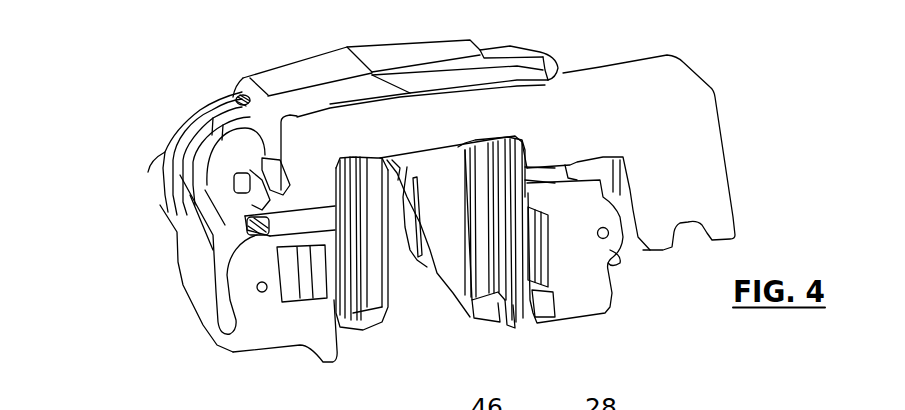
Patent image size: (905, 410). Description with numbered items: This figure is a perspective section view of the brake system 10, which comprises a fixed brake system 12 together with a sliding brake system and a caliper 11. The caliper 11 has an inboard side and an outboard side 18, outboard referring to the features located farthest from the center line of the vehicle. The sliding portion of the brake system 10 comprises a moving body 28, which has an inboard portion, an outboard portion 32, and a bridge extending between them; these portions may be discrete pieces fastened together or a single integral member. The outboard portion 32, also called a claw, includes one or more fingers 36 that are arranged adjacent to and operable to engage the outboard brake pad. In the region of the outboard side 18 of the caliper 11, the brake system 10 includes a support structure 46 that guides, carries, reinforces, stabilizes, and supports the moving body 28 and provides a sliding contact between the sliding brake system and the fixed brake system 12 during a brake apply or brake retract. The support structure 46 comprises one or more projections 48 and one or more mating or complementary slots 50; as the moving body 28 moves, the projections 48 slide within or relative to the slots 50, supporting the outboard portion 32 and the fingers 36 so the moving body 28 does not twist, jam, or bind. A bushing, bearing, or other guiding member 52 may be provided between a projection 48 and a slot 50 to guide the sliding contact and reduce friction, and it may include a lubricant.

The brake system 10 is at (101, 48).
The caliper 11 is at (173, 252).
The fixed brake system 12 is at (149, 168).
The outboard side 18 is at (197, 290).
The moving body 28 is at (691, 63).
The outboard portion 32 is at (305, 138).
The fingers 36 is at (307, 182).
The support structure 46 is at (257, 257).
The projection 48 is at (222, 322).
The slot 50 is at (300, 237).
The guiding member 52 is at (335, 290).